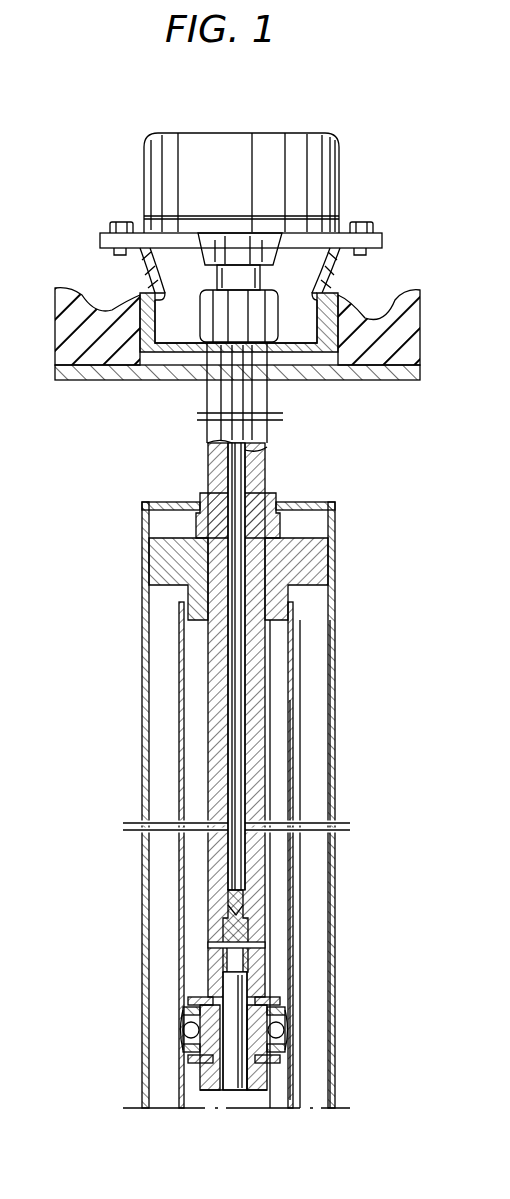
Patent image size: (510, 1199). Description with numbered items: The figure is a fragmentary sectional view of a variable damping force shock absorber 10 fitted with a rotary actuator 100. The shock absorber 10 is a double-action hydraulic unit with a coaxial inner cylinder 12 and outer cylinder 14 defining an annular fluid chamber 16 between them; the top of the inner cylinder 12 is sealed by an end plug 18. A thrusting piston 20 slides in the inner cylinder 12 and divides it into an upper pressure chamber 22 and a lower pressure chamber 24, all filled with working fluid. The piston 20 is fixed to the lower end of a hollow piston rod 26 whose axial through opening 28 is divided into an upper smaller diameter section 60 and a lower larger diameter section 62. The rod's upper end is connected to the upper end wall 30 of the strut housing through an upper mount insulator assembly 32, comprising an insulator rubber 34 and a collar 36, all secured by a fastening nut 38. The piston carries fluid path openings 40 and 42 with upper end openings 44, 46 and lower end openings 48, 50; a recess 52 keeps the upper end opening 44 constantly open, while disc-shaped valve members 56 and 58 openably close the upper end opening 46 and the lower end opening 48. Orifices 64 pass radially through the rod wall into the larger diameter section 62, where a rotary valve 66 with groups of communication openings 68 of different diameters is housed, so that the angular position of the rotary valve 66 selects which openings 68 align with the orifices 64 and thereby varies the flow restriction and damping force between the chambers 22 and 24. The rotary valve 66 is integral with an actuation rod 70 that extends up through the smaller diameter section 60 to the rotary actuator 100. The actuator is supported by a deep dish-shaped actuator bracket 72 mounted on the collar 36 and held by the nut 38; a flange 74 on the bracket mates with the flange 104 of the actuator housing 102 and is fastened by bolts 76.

The variable damping force shock absorber 10 is at (336, 565).
The inner cylinder 12 is at (294, 677).
The outer cylinder 14 is at (335, 745).
The annular fluid chamber 16 is at (315, 888).
The end plug 18 is at (305, 540).
The thrusting piston 20 is at (290, 1003).
The upper pressure chamber 22 is at (280, 795).
The lower pressure chamber 24 is at (282, 1102).
The piston rod 26 is at (255, 866).
The through opening 28 is at (233, 765).
The upper end wall 30 is at (330, 372).
The upper mount insulator assembly 32 is at (364, 291).
The insulator rubber 34 is at (405, 309).
The collar 36 is at (282, 372).
The fastening nut 38 is at (205, 318).
The fluid path opening 40 is at (198, 1032).
The fluid path opening 42 is at (272, 1040).
The upper end opening 44 is at (190, 1022).
The upper end opening 46 is at (276, 1022).
The lower end opening 48 is at (190, 1050).
The lower end opening 50 is at (186, 1008).
The recess 52 is at (262, 1082).
The disc-shaped valve member 56 is at (213, 1000).
The disc-shaped valve member 58 is at (196, 1066).
The upper smaller diameter section 60 is at (242, 718).
The lower larger diameter section 62 is at (242, 985).
The orifice 64 is at (210, 946).
The rotary valve 66 is at (232, 935).
The communication openings 68 is at (262, 948).
The actuation rod 70 is at (238, 642).
The actuator bracket 72 is at (332, 258).
The flange 74 is at (100, 243).
The fastening bolts 76 is at (121, 221).
The rotary actuator 100 is at (352, 139).
The housing 102 is at (152, 160).
The flange 104 is at (103, 236).